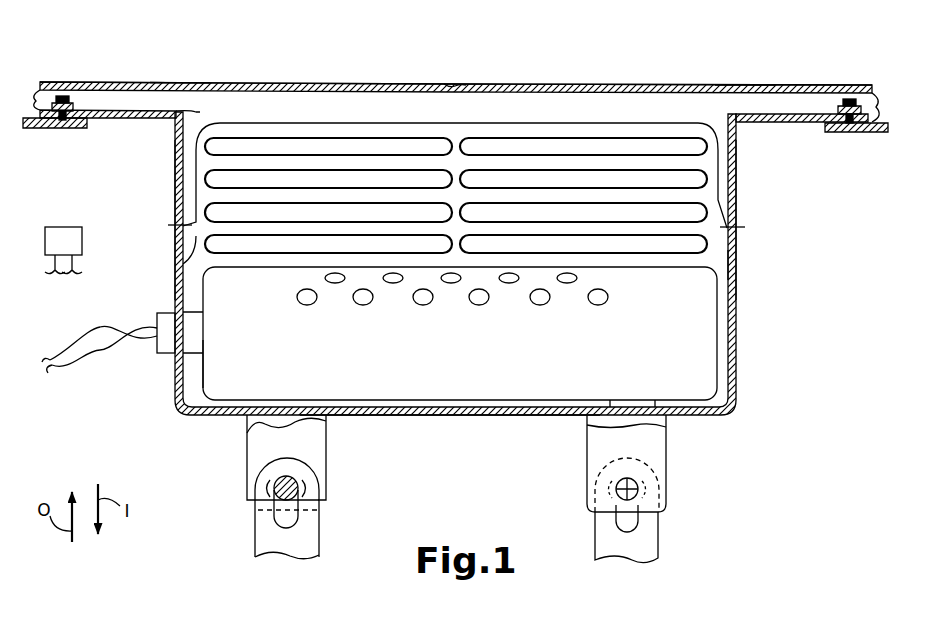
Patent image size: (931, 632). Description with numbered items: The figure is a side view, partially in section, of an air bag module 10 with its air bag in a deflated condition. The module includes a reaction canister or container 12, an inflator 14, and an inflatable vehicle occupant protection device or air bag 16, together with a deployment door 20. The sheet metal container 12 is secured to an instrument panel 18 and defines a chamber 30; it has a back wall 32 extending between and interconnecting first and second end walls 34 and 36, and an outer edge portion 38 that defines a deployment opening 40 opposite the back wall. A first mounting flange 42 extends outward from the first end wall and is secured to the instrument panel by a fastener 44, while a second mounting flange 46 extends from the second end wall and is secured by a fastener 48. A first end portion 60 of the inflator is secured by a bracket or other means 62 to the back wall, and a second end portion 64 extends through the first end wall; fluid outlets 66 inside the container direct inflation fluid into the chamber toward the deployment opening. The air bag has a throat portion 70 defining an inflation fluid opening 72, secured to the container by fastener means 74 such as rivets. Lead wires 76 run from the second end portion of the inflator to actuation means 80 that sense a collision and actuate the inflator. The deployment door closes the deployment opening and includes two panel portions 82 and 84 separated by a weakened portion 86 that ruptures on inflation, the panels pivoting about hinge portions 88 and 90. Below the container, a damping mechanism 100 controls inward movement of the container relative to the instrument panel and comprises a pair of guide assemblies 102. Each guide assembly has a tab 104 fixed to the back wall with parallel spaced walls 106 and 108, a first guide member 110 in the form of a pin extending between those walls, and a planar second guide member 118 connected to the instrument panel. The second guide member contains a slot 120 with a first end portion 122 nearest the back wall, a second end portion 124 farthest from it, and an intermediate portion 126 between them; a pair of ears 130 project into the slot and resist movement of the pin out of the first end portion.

The air bag module 10 is at (576, 60).
The reaction canister or container 12 is at (471, 289).
The inflator 14 is at (500, 337).
The inflatable vehicle occupant protection device or air bag 16 is at (453, 169).
The instrument panel 18 is at (36, 135).
The deployment door 20 is at (386, 78).
The chamber 30 is at (713, 262).
The back wall 32 is at (455, 418).
The first end wall 34 is at (180, 233).
The second end wall 36 is at (737, 173).
The outer edge portion 38 is at (196, 112).
The deployment opening 40 is at (454, 99).
The first mounting flange 42 is at (120, 119).
The fastener 44 is at (62, 96).
The second mounting flange 46 is at (776, 122).
The fastener 48 is at (850, 98).
The first end portion 60 is at (706, 366).
The bracket or other means 62 is at (625, 400).
The second end portion 64 is at (165, 356).
The fluid outlets 66 is at (363, 305).
The throat portion 70 is at (180, 176).
The inflation fluid opening 72 is at (196, 240).
The fastener means 74 is at (746, 227).
The lead wires 76 is at (75, 350).
The actuation means 80 is at (60, 226).
The panel portion 82 is at (352, 83).
The panel portion 84 is at (508, 84).
The weakened portion 86 is at (456, 84).
The hinge portion 88 is at (178, 82).
The hinge portion 90 is at (746, 86).
The damping mechanism or control mechanism 100 is at (490, 516).
The guide assembly 102 is at (232, 537).
The tab 104 is at (243, 483).
The wall 106 is at (262, 432).
The wall 108 is at (267, 443).
The first guide member 110 is at (326, 470).
The second guide member 118 is at (312, 555).
The slot 120 is at (282, 537).
The first end portion 122 is at (300, 480).
The second end portion 124 is at (296, 525).
The intermediate portion 126 is at (300, 510).
The ears 130 is at (302, 496).